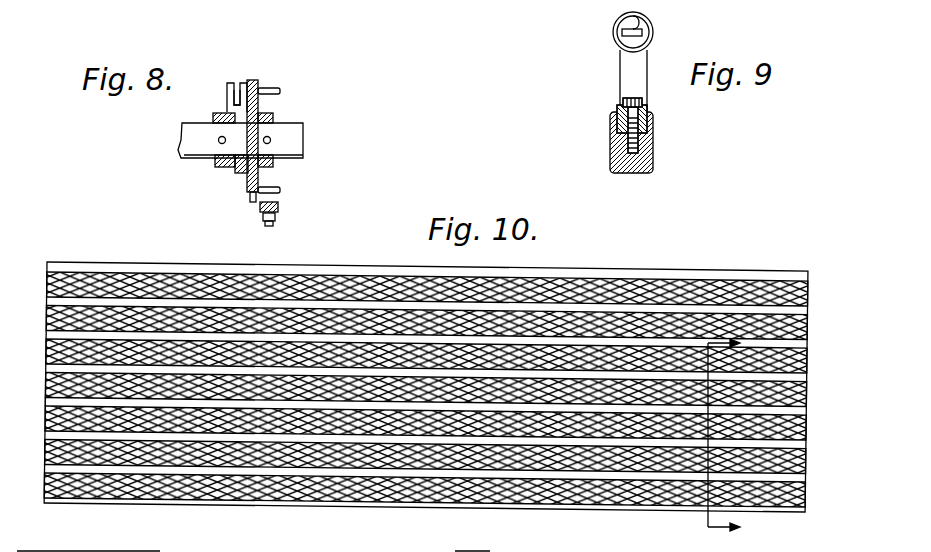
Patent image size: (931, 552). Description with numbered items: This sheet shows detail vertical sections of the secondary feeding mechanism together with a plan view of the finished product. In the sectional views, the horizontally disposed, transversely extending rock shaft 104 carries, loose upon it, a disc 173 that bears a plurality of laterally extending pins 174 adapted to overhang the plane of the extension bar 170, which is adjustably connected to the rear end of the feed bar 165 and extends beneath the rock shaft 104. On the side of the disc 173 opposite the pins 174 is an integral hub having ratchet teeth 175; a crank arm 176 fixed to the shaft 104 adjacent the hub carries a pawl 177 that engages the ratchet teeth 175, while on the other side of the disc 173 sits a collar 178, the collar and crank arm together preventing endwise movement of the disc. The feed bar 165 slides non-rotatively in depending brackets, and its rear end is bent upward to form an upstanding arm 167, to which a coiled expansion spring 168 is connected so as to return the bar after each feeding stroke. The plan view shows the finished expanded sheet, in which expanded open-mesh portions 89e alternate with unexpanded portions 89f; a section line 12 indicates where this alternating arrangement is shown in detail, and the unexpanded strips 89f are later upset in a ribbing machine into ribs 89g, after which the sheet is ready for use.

In FIG. 8, the rock shaft 104 is at (178, 137).
In FIG. 8, the disc 173 is at (257, 102).
In FIG. 8, the pins 174 is at (272, 90).
In FIG. 8, the ratchet teeth 175 is at (243, 168).
In FIG. 8, the crank arm 176 is at (230, 97).
In FIG. 8, the pawl 177 is at (240, 83).
In FIG. 8, the collar 178 is at (267, 117).
In FIG. 8, the extension bar 170 is at (278, 208).
In FIG. 9, the extension bar 170 is at (610, 138).
In FIG. 9, the feed bar 165 is at (618, 107).
In FIG. 9, the upstanding arm 167 is at (622, 57).
In FIG. 9, the coiled expansion spring 168 is at (618, 25).
In FIG. 10, the expanded portions 89e is at (113, 283).
In FIG. 10, the unexpanded portions 89f is at (50, 330).
In FIG. 10, the ribs 89g is at (50, 440).
In FIG. 10, the section line 12 is at (700, 435).